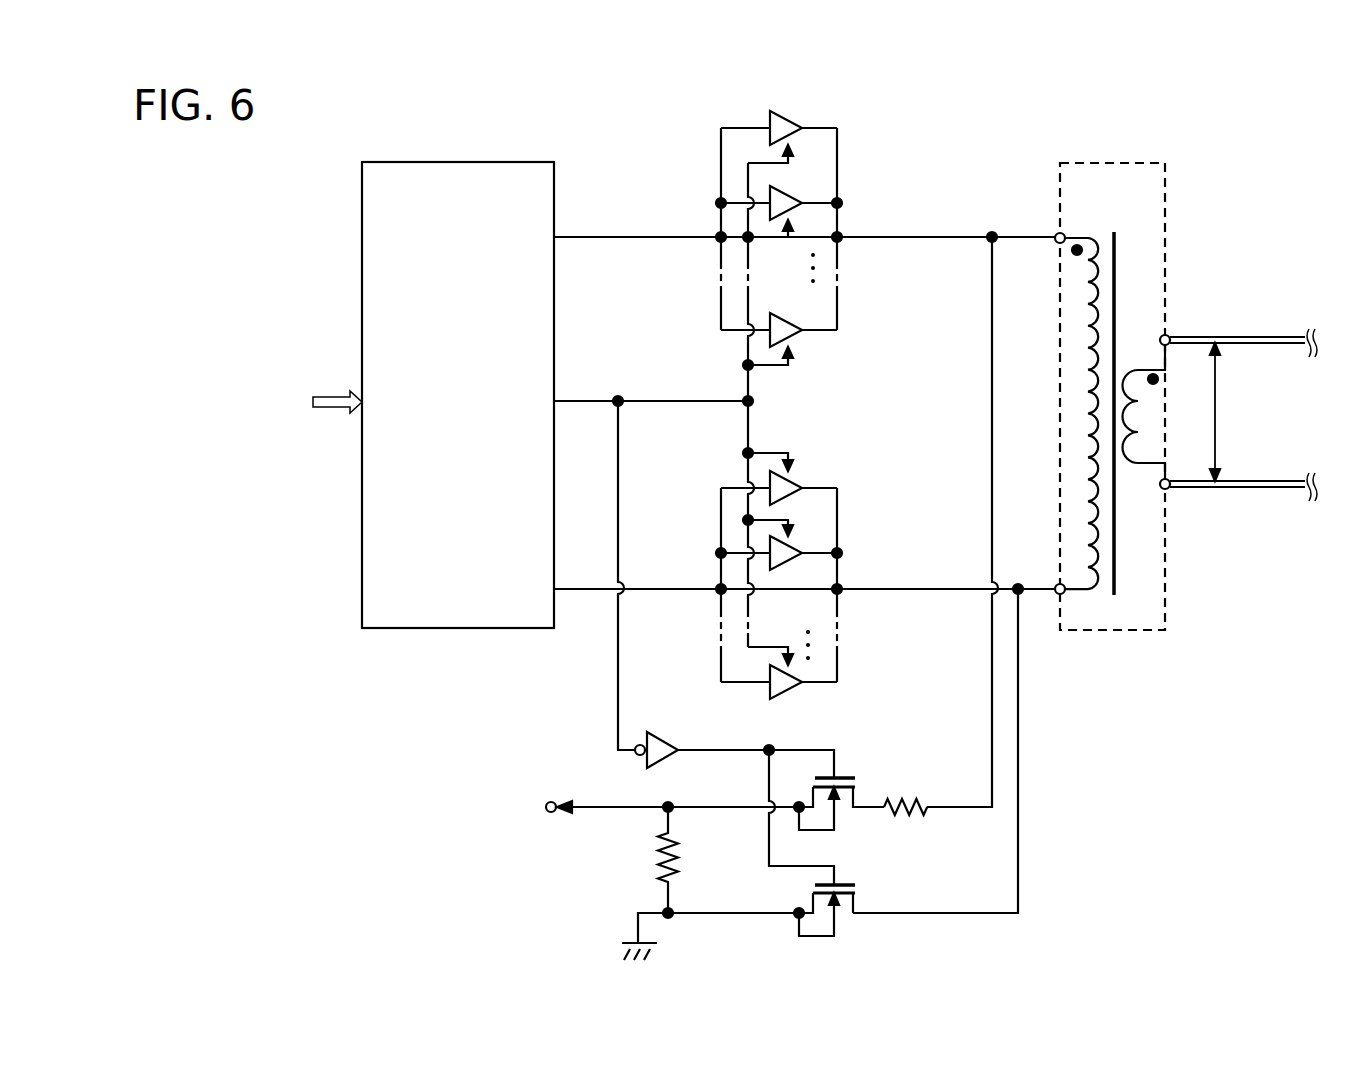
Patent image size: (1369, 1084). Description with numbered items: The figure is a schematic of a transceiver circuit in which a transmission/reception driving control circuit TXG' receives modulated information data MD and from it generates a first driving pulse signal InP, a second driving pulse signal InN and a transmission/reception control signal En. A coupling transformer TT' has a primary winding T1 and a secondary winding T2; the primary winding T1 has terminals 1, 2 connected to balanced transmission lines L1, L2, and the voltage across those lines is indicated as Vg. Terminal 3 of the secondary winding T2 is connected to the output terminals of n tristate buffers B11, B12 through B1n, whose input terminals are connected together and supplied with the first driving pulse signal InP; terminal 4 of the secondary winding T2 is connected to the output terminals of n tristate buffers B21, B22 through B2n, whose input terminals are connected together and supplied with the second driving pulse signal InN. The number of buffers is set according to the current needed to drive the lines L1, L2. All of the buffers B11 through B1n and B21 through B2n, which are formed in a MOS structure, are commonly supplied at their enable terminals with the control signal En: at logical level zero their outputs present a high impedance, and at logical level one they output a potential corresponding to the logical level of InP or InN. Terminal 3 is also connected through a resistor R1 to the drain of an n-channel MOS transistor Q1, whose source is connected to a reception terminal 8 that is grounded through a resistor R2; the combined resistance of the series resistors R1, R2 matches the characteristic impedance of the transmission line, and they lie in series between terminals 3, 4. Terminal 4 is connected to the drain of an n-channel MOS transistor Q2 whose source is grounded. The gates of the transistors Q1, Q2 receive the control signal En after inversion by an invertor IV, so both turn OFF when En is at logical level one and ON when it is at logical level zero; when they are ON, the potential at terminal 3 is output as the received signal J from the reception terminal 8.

The transmission/reception driving control circuit TXG' is at (458, 362).
The modulated information data MD is at (254, 406).
The first driving pulse signal InP is at (804, 225).
The second driving pulse signal InN is at (804, 577).
The transmission/reception control signal En is at (653, 560).
The tristate buffer B11 is at (802, 122).
The tristate buffer B12 is at (802, 204).
The tristate buffer B1n is at (802, 331).
The tristate buffer B21 is at (803, 484).
The tristate buffer B22 is at (793, 562).
The tristate buffer B2n is at (793, 692).
The coupling transformer TT' is at (1113, 363).
The primary winding T1 is at (1147, 350).
The secondary winding T2 is at (1096, 225).
The terminal 1 is at (1173, 327).
The terminal 2 is at (1174, 498).
The terminal 3 is at (1053, 225).
The terminal 4 is at (1051, 577).
The balanced transmission line L1 is at (1254, 336).
The balanced transmission line L2 is at (1254, 490).
The voltage Vg is at (1230, 412).
The invertor IV is at (673, 727).
The reception terminal 8 is at (552, 802).
The n-channel MOS transistor Q1 is at (855, 797).
The n-channel MOS transistor Q2 is at (855, 904).
The resistor R1 is at (921, 812).
The resistor R2 is at (655, 862).